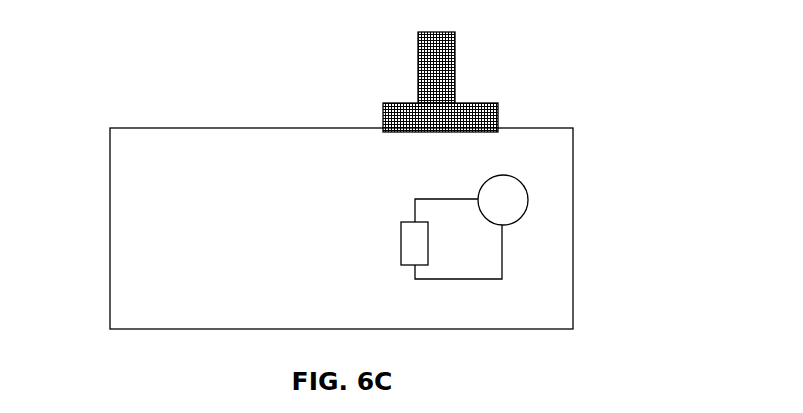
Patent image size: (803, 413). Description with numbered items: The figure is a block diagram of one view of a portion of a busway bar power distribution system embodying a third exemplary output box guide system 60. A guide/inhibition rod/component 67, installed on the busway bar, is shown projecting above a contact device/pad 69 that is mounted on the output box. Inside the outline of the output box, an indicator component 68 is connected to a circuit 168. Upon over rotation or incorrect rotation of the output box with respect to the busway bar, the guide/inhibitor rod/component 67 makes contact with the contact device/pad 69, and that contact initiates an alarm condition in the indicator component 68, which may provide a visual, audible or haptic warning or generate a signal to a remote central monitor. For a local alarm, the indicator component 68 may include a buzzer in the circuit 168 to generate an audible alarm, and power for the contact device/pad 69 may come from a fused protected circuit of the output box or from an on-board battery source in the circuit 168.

The output box guide system 60 is at (80, 44).
The guide/inhibition rod/component 67 is at (455, 93).
The contact device/pad 69 is at (450, 127).
The indicator component 68 is at (500, 200).
The circuit 168 is at (415, 243).